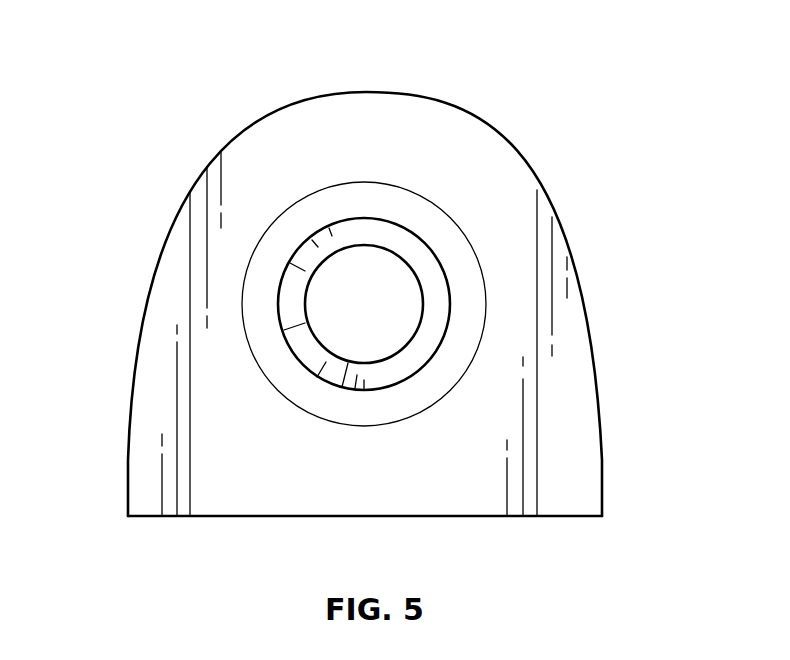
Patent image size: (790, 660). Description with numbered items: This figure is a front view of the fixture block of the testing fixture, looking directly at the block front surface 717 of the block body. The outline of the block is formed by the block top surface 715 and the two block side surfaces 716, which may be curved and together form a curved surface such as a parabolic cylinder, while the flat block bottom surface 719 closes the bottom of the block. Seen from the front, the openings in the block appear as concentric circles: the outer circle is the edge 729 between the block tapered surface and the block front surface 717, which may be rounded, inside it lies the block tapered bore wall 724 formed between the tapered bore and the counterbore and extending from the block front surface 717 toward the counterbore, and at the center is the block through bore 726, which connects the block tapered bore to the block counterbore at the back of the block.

The block top surface 715 is at (374, 86).
The block side surfaces 716 is at (128, 370).
The block front surface 717 is at (570, 380).
The block bottom surface 719 is at (491, 523).
The block tapered bore wall 724 is at (427, 256).
The block through bore 726 is at (340, 333).
The edge 729 is at (344, 207).